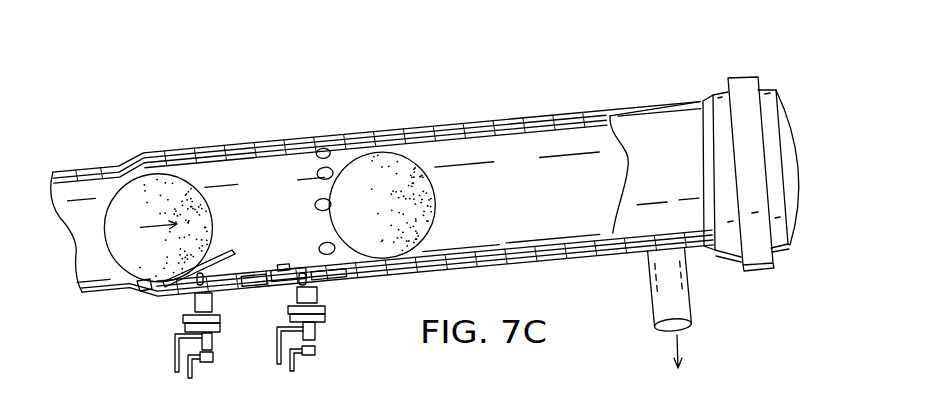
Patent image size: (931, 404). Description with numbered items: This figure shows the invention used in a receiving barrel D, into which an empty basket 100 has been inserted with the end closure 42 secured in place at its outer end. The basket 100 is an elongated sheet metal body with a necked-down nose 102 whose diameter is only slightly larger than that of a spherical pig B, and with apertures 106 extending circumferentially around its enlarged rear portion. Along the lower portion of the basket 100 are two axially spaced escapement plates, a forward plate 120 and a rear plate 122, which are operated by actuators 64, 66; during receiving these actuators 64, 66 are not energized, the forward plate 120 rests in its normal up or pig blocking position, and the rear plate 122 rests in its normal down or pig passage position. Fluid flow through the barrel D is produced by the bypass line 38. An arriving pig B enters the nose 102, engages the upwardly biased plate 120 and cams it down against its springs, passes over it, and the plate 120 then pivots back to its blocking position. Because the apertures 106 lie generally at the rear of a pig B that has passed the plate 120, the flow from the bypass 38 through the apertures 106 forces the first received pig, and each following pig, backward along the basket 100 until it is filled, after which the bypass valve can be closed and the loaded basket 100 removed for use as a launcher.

The basket 100 is at (443, 127).
The nose 102 is at (182, 168).
The apertures 106 is at (331, 169).
The receiving barrel D is at (510, 112).
The pig B is at (131, 199).
The end closure 42 is at (742, 92).
The bypass line 38 is at (673, 308).
The forward escapement plate 120 is at (220, 253).
The rear escapement plate 122 is at (317, 268).
The actuator 64 is at (235, 318).
The actuator 66 is at (340, 306).